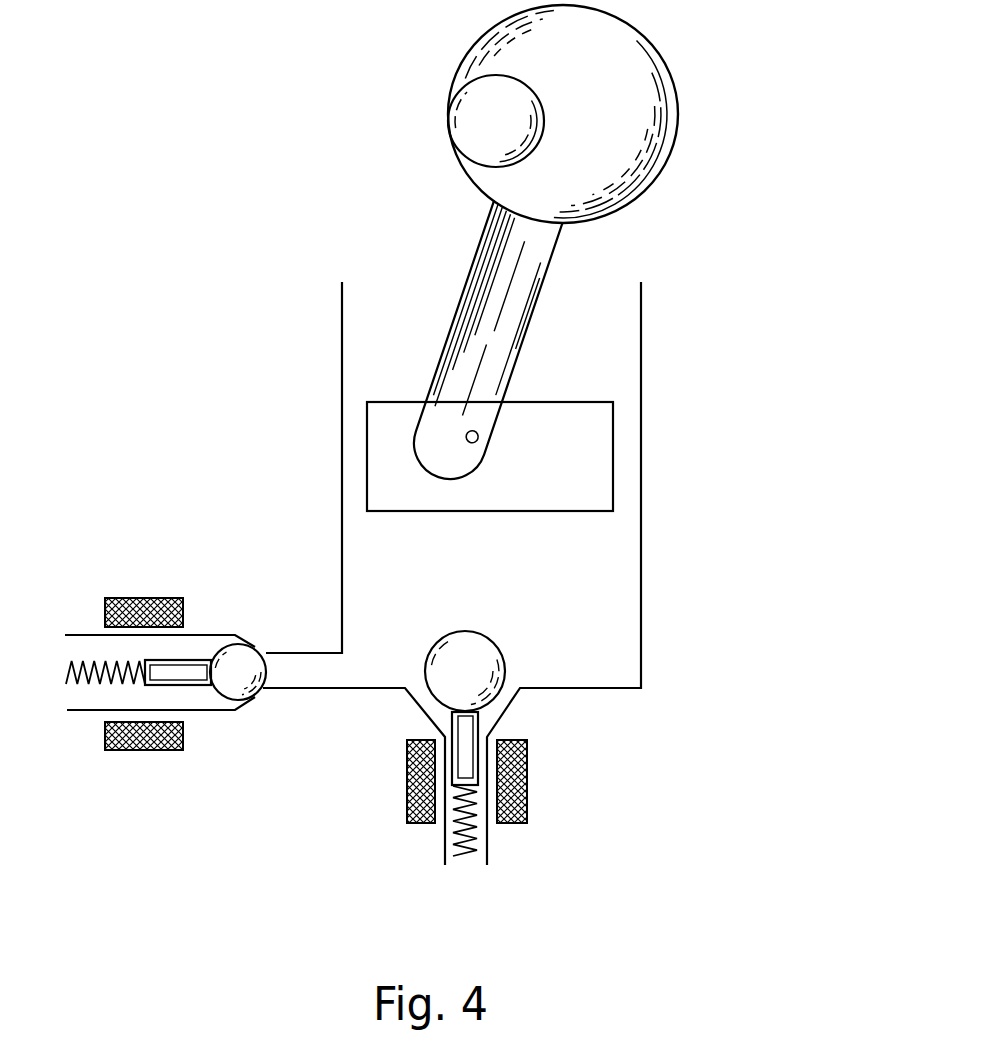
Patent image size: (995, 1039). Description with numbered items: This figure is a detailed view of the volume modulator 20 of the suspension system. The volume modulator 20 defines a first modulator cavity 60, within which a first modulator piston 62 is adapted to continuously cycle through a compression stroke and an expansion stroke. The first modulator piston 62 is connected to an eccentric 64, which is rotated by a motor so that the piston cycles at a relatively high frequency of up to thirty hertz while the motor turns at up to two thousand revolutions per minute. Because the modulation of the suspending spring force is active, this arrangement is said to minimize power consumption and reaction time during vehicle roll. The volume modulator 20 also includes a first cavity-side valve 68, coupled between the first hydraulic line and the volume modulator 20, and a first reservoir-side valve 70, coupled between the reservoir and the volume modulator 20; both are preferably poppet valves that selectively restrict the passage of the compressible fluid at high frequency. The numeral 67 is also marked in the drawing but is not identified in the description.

The volume modulator 20 is at (641, 360).
The first modulator cavity 60 is at (563, 597).
The first modulator piston 62 is at (593, 468).
The eccentric 64 is at (678, 122).
The housing base portion 67 is at (210, 843).
The first cavity-side valve 68 is at (252, 625).
The first reservoir-side valve 70 is at (543, 732).